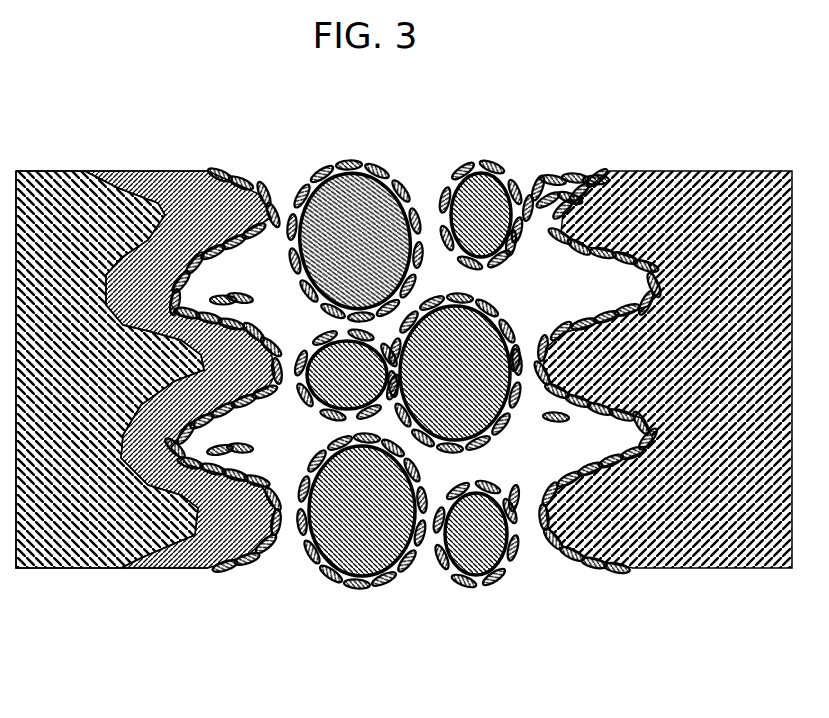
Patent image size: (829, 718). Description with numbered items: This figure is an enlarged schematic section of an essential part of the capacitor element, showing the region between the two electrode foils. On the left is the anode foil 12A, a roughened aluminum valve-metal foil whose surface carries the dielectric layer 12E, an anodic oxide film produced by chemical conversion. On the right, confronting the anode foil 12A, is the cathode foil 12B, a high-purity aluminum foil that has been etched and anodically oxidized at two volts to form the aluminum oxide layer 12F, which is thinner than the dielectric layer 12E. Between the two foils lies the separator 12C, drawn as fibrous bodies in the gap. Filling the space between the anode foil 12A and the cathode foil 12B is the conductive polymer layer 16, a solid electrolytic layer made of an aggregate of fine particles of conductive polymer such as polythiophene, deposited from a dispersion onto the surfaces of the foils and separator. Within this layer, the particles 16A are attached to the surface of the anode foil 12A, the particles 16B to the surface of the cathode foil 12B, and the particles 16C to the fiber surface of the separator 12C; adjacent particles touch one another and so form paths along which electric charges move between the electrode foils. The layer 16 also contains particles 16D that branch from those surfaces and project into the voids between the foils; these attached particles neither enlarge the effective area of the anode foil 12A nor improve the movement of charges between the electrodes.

The anode foil 12A is at (112, 342).
The cathode foil 12B is at (667, 342).
The separator 12C is at (355, 219).
The dielectric layer 12E is at (180, 342).
The aluminum oxide layer 12F is at (578, 186).
The conductive polymer layer 16 is at (413, 421).
The conductive polymer fine particles 16A is at (224, 401).
The conductive polymer fine particles 16B is at (581, 401).
The conductive polymer fine particles 16C is at (472, 397).
The conductive polymer fine particles 16D is at (408, 464).